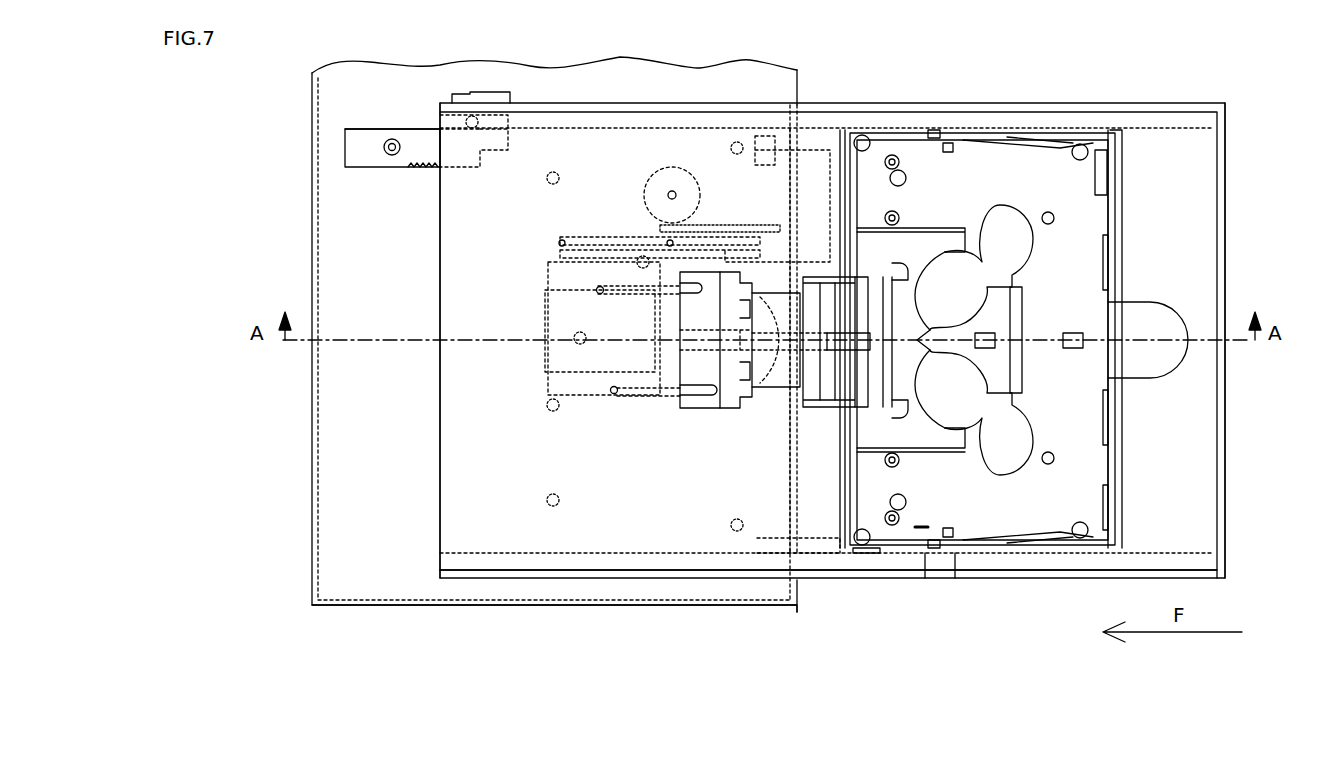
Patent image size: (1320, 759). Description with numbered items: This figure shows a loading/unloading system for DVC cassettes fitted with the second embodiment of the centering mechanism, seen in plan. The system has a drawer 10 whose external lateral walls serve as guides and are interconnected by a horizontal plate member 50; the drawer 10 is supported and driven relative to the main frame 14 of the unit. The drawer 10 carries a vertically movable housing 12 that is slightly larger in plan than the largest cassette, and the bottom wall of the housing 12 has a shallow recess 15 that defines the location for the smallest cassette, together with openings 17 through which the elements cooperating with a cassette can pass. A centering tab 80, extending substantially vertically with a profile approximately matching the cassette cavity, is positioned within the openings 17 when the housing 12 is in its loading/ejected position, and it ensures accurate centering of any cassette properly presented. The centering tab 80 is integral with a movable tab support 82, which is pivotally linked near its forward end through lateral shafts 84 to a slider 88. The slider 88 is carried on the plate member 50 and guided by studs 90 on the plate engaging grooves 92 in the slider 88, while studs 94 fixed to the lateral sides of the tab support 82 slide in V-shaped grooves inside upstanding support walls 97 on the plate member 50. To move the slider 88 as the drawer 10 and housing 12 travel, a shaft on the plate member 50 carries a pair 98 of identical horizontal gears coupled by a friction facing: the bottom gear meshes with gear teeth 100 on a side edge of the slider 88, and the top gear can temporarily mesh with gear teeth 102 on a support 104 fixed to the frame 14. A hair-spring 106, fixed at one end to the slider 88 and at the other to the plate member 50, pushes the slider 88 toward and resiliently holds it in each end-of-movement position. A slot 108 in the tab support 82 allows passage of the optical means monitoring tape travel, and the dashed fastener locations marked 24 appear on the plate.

The drawer 10 is at (1242, 272).
The housing 12 is at (1035, 523).
The main frame 14 is at (345, 265).
The shallow recess 15 is at (1000, 320).
The openings 17 is at (1003, 228).
The fastener 24 is at (553, 500).
The horizontal plate member 50 is at (468, 505).
The centering tab 80 is at (920, 325).
The tab support 82 is at (827, 383).
The lateral shafts 84 is at (740, 242).
The slider 88 is at (593, 235).
The studs 90 is at (562, 243).
The grooves 92 is at (555, 262).
The studs 94 is at (865, 230).
The upstanding support walls 97 is at (810, 275).
The pair of gears 98 is at (688, 165).
The gear teeth 100 is at (708, 222).
The gear teeth 102 is at (460, 172).
The support 104 is at (412, 138).
The hair-spring 106 is at (625, 286).
The slot 108 is at (845, 338).